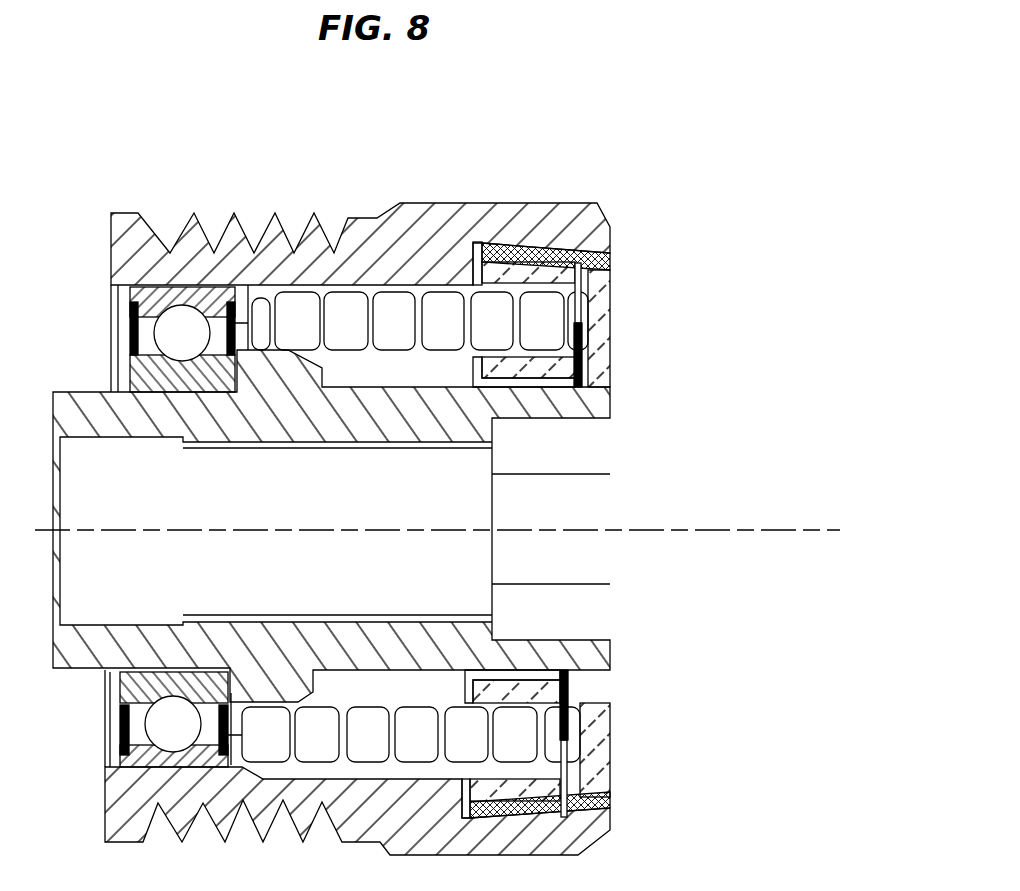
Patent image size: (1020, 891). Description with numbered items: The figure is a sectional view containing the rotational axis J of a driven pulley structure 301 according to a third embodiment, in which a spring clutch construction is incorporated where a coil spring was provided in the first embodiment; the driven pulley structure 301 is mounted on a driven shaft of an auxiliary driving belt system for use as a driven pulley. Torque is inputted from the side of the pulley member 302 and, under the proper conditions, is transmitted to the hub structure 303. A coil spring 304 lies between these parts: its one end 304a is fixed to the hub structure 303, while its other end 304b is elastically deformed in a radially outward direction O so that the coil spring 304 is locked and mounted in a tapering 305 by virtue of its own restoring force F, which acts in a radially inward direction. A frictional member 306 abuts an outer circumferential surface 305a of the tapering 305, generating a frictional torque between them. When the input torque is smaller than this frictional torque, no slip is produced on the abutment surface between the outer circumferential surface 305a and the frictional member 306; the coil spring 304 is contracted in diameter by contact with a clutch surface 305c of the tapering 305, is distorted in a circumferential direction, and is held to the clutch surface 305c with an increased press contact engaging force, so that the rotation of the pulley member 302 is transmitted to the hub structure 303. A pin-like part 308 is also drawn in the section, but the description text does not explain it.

The driven pulley structure 301 is at (628, 191).
The pulley member 302 is at (597, 232).
The hub structure 303 is at (590, 403).
The coil spring 304 is at (497, 318).
The one end of the coil spring 304a is at (248, 290).
The other end of the coil spring 304b is at (603, 330).
The tapering 305 is at (605, 302).
The outer circumferential surface of the tapering 305a is at (516, 300).
The clutch surface of the tapering 305c is at (519, 268).
The frictional member 306 is at (607, 265).
The pin 308 is at (590, 385).
The restoring force F is at (588, 358).
The radially outward direction O is at (577, 263).
The rotational axis J is at (795, 532).